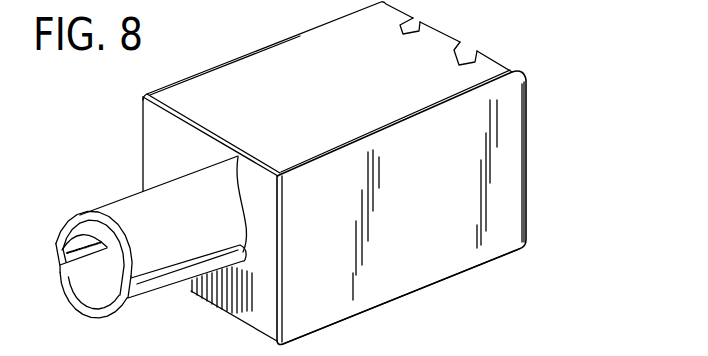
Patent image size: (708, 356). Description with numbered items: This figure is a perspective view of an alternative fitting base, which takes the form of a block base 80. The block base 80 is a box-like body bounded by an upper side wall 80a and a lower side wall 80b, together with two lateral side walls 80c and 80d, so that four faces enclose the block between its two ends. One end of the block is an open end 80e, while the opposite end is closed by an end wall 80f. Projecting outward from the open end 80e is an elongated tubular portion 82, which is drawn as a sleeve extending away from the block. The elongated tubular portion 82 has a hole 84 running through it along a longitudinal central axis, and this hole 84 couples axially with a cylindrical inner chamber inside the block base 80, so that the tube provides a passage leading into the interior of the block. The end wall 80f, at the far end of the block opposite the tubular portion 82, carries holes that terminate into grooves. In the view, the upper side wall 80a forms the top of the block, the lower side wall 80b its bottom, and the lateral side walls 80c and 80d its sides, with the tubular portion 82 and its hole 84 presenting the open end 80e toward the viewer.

The block base 80 is at (552, 82).
The upper side wall 80a is at (286, 77).
The lower side wall 80b is at (389, 300).
The lateral side wall 80c is at (500, 174).
The lateral side wall 80d is at (212, 68).
The open end 80e is at (160, 132).
The end wall 80f is at (457, 34).
The elongated tubular portion 82 is at (103, 208).
The hole 84 is at (95, 290).